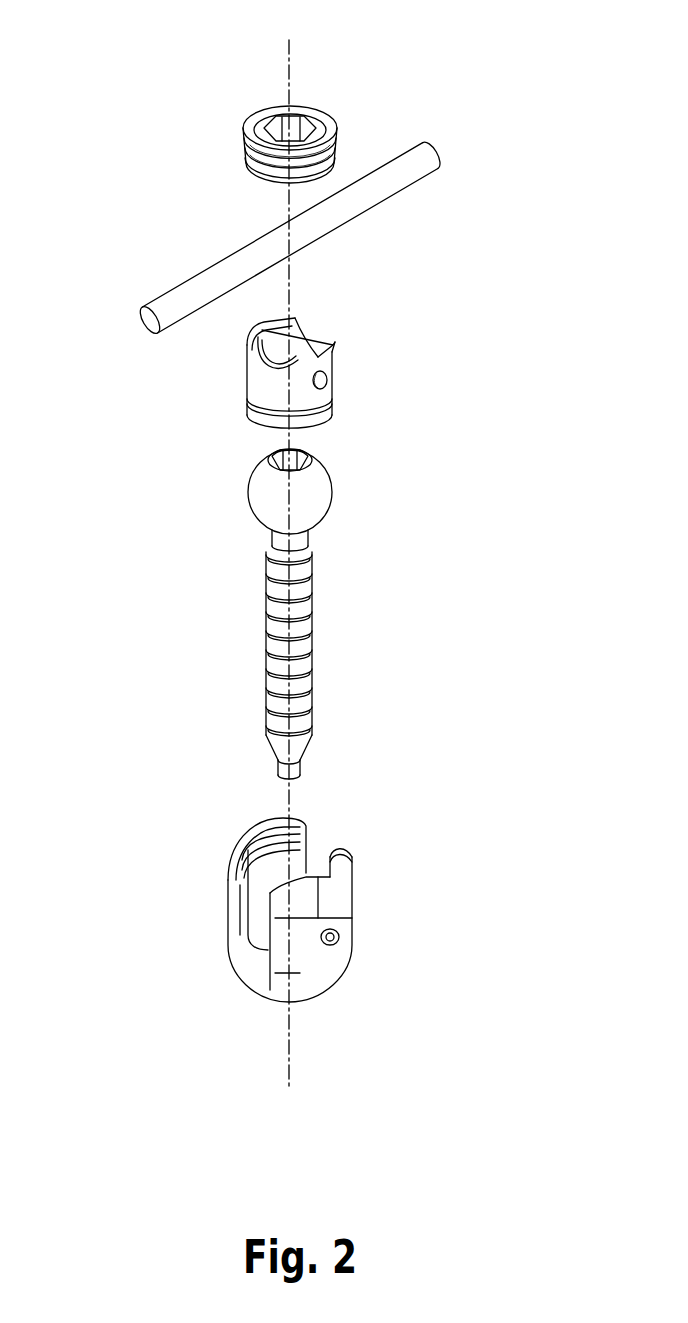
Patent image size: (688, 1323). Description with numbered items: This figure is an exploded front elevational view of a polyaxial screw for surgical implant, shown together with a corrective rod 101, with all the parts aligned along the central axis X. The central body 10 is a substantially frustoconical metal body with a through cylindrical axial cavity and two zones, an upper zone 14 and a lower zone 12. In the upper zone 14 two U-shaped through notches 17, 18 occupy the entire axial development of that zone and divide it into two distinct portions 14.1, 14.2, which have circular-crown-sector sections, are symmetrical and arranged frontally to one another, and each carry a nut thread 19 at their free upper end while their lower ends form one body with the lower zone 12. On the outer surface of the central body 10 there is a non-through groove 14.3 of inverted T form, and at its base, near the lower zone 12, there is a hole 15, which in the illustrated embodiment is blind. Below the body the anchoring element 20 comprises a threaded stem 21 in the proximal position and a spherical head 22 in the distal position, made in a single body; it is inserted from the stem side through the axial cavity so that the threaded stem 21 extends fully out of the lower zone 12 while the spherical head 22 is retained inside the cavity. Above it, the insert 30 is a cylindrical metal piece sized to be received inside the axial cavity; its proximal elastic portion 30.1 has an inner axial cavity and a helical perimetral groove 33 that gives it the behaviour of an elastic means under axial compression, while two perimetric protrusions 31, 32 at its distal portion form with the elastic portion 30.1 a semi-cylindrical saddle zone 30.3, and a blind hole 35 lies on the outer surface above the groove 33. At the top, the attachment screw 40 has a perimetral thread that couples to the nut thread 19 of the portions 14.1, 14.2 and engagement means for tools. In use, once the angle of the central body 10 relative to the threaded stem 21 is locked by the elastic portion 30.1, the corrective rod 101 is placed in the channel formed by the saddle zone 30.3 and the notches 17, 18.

The central axis X is at (294, 56).
The attachment screw 40 is at (262, 105).
The corrective rod 101 is at (207, 262).
The insert 30 is at (313, 351).
The elastic portion 30.1 is at (334, 415).
The saddle zone 30.3 is at (302, 345).
The perimetric protrusion 31 is at (318, 355).
The perimetric protrusion 32 is at (260, 332).
The perimetral groove 33 is at (265, 399).
The blind hole 35 is at (320, 380).
The anchoring element 20 is at (387, 614).
The spherical head 22 is at (323, 492).
The threaded stem 21 is at (308, 700).
The central body 10 is at (296, 912).
The lower zone 12 is at (215, 988).
The upper zone 14 is at (282, 876).
The portion 14.1 is at (403, 822).
The portion 14.2 is at (227, 852).
The non-through groove 14.3 is at (328, 913).
The hole 15 is at (330, 935).
The U-shaped through notch 17 is at (343, 845).
The U-shaped through notch 18 is at (253, 923).
The nut thread 19 is at (268, 838).